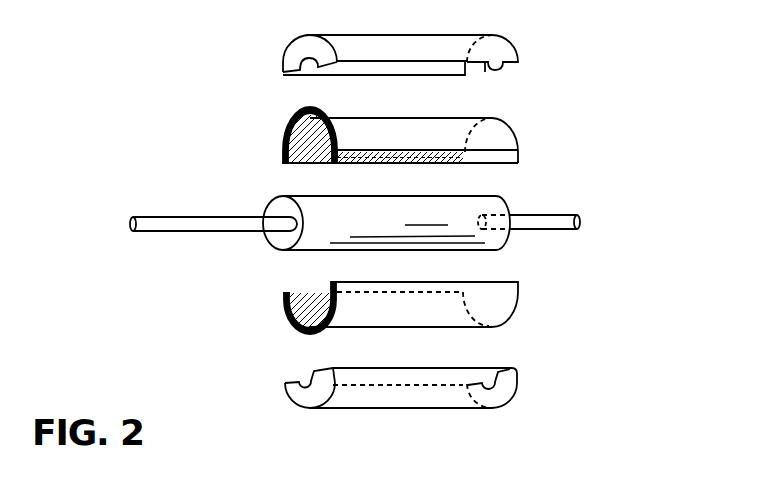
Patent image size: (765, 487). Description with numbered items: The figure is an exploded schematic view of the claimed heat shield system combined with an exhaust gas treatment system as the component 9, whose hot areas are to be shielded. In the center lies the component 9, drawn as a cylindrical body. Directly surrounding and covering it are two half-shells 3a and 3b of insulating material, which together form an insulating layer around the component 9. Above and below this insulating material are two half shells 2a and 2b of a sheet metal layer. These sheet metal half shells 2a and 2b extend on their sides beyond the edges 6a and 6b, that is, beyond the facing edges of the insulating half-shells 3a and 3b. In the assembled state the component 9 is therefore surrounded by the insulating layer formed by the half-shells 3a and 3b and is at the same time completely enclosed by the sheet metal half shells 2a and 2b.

The half shell of sheet metal layer 2a is at (505, 40).
The half shell of sheet metal layer 2b is at (515, 385).
The half-shell of insulating material 3a is at (510, 133).
The half-shell of insulating material 3b is at (512, 297).
The edge of insulating layer 6a is at (283, 148).
The edge of insulating layer 6b is at (284, 300).
The component 9 is at (498, 207).